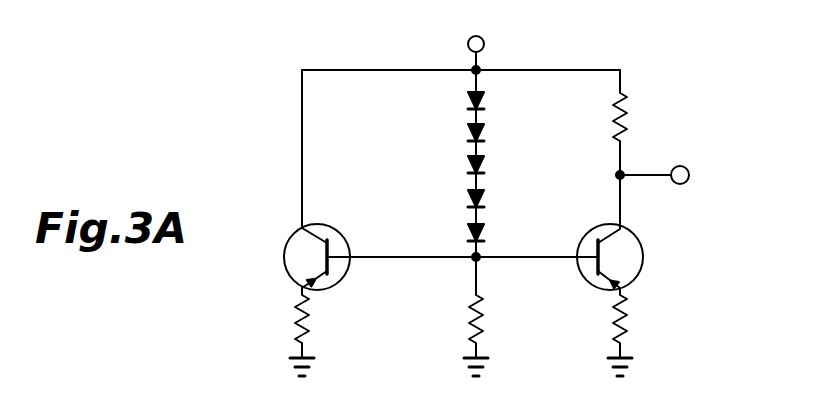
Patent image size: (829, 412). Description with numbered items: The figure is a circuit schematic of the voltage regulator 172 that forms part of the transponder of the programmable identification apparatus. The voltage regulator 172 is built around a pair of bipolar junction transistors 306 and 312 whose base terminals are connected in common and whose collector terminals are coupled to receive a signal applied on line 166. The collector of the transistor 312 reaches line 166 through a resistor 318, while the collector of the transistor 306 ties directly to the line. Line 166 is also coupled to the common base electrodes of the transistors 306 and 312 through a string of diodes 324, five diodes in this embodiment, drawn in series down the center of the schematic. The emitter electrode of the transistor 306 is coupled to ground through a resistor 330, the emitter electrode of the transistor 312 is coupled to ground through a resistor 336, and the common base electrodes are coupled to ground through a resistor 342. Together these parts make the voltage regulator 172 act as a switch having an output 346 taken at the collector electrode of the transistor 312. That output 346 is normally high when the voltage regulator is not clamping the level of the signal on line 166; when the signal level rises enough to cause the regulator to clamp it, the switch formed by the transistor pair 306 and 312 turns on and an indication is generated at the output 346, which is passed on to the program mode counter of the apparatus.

The voltage regulator 172 is at (230, 135).
The line 166 is at (468, 47).
The diodes 324 is at (468, 97).
The bipolar junction transistor 306 is at (296, 230).
The bipolar junction transistor 312 is at (641, 272).
The resistor 318 is at (624, 102).
The resistor 330 is at (294, 319).
The resistor 336 is at (612, 320).
The resistor 342 is at (466, 320).
The output 346 is at (687, 168).